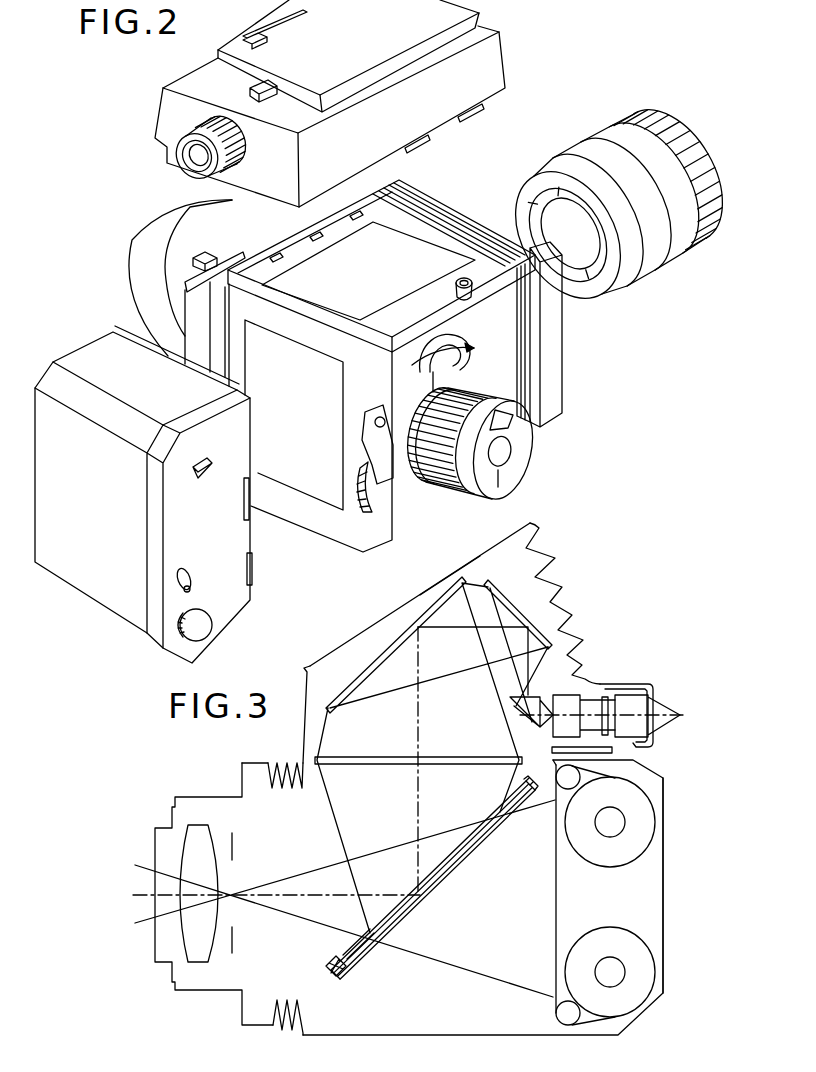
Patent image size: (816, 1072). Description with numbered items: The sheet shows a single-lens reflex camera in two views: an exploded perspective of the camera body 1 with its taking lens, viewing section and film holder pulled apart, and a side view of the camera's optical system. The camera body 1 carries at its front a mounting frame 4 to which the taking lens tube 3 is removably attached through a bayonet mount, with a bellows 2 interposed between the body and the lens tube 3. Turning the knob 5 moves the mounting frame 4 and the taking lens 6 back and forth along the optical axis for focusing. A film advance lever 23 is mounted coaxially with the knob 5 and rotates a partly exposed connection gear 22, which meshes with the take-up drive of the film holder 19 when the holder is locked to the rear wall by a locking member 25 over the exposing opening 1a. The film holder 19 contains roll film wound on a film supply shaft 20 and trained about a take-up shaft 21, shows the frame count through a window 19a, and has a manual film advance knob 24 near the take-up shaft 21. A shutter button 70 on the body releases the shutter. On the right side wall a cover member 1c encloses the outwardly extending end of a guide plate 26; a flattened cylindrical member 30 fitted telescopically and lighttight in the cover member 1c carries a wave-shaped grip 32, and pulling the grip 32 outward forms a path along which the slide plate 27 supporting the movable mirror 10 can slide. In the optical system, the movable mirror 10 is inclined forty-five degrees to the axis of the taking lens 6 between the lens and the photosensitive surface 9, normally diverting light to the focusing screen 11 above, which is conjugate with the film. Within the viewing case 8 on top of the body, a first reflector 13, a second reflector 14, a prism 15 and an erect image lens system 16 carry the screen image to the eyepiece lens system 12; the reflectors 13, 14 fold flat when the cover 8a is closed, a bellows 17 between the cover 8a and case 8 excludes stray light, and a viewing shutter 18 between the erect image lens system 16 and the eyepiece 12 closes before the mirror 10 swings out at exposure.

In FIG. 2, the camera body 1 is at (405, 522).
In FIG. 3, the camera body 1 is at (437, 1037).
In FIG. 2, the exposing opening 1a is at (298, 497).
In FIG. 2, the cover member 1c is at (236, 252).
In FIG. 2, the bellows 2 is at (532, 437).
In FIG. 3, the bellows 2 is at (277, 1023).
In FIG. 2, the taking lens tube 3 is at (657, 272).
In FIG. 2, the mounting frame 4 is at (556, 318).
In FIG. 2, the knob 5 is at (466, 497).
In FIG. 2, the taking lens 6 is at (589, 280).
In FIG. 3, the taking lens 6 is at (188, 941).
In FIG. 2, the viewing case 8 is at (497, 64).
In FIG. 3, the viewing case 8 is at (303, 702).
In FIG. 3, the cover 8a is at (398, 607).
In FIG. 3, the photosensitive surface 9 is at (555, 905).
In FIG. 3, the movable mirror 10 is at (468, 848).
In FIG. 2, the focusing screen 11 is at (427, 257).
In FIG. 3, the focusing screen 11 is at (470, 758).
In FIG. 2, the eyepiece lens system 12 is at (186, 170).
In FIG. 3, the eyepiece lens system 12 is at (627, 694).
In FIG. 3, the first reflector 13 is at (374, 663).
In FIG. 3, the second reflector 14 is at (512, 598).
In FIG. 3, the prism 15 is at (525, 733).
In FIG. 3, the erect image lens system 16 is at (563, 693).
In FIG. 3, the bellows 17 is at (568, 580).
In FIG. 3, the viewing shutter 18 is at (610, 740).
In FIG. 2, the film holder 19 is at (85, 588).
In FIG. 3, the film holder 19 is at (663, 897).
In FIG. 2, the window 19a is at (205, 472).
In FIG. 3, the film supply shaft 20 is at (610, 830).
In FIG. 3, the take-up shaft 21 is at (610, 978).
In FIG. 2, the connection gear 22 is at (367, 510).
In FIG. 2, the film advance lever 23 is at (435, 363).
In FIG. 2, the manual film advance knob 24 is at (200, 617).
In FIG. 2, the locking member 25 is at (390, 463).
In FIG. 3, the guide plate 26 is at (350, 949).
In FIG. 3, the slide plate 27 is at (364, 950).
In FIG. 2, the flattened cylindrical member 30 is at (205, 254).
In FIG. 2, the grip 32 is at (130, 270).
In FIG. 2, the shutter button 70 is at (478, 294).